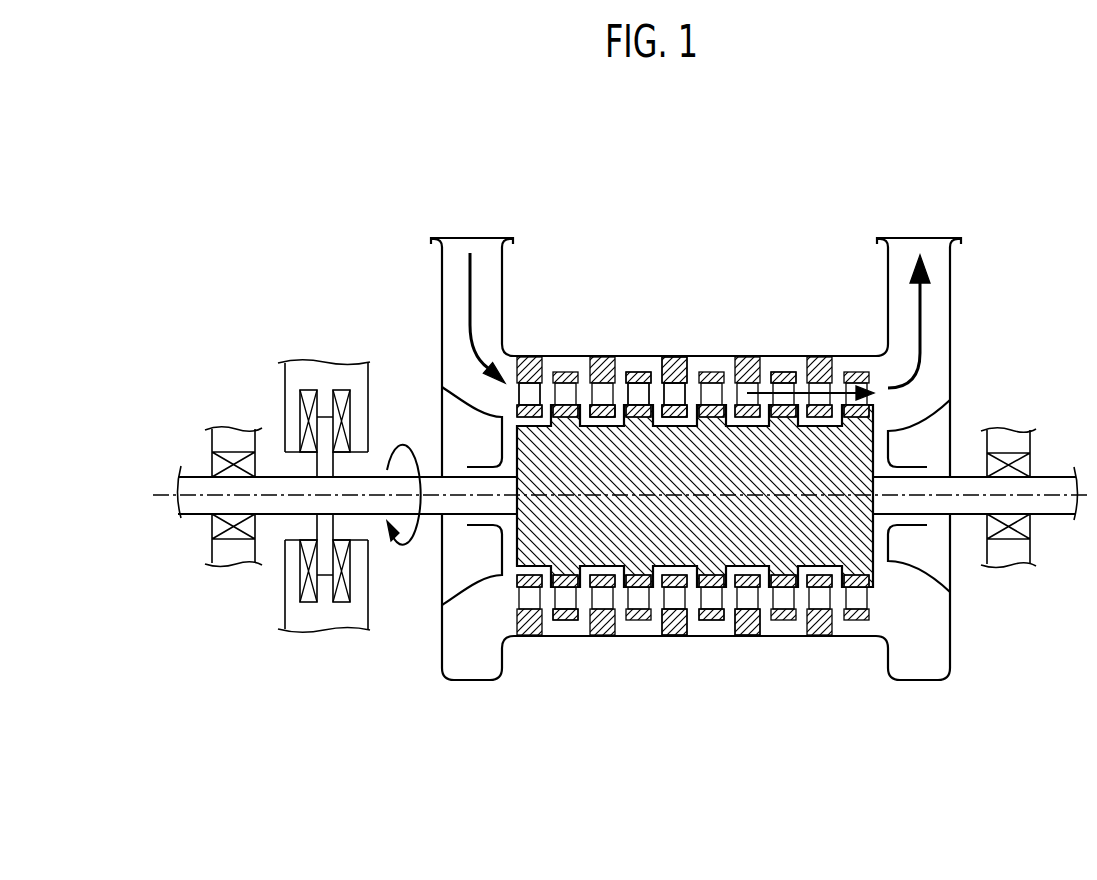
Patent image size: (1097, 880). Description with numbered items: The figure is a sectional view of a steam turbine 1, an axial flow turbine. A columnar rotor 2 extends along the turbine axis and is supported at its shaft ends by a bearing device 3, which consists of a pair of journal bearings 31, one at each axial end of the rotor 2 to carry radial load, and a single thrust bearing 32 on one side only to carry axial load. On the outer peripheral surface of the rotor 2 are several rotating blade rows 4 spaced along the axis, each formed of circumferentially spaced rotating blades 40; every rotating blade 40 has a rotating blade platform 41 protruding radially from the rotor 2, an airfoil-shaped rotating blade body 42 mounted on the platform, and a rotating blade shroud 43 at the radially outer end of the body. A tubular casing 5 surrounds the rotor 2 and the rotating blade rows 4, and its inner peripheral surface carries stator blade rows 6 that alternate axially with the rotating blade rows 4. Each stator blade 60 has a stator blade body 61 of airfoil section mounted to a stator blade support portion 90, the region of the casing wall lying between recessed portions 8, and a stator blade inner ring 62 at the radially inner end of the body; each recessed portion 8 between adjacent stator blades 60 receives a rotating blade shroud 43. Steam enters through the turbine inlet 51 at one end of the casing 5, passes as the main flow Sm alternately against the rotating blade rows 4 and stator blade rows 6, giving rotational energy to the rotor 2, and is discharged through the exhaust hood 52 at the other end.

The steam turbine 1 is at (734, 498).
The rotor 2 is at (623, 540).
The bearing device 3 is at (621, 560).
The journal bearing 31 is at (232, 577).
The thrust bearing 32 is at (323, 637).
The rotating blade row 4 is at (560, 646).
The casing 5 is at (468, 682).
The stator blade row 6 is at (667, 646).
The recessed portion 8 is at (776, 363).
The rotating blade 40 is at (654, 357).
The rotating blade platform 41 is at (613, 409).
The rotating blade body 42 is at (637, 384).
The rotating blade shroud 43 is at (643, 372).
The turbine inlet 51 is at (502, 270).
The exhaust hood 52 is at (951, 296).
The stator blade 60 is at (544, 393).
The stator blade body 61 is at (682, 395).
The stator blade inner ring 62 is at (684, 412).
The stator blade support portion 90 is at (674, 357).
The main flow Sm is at (801, 392).